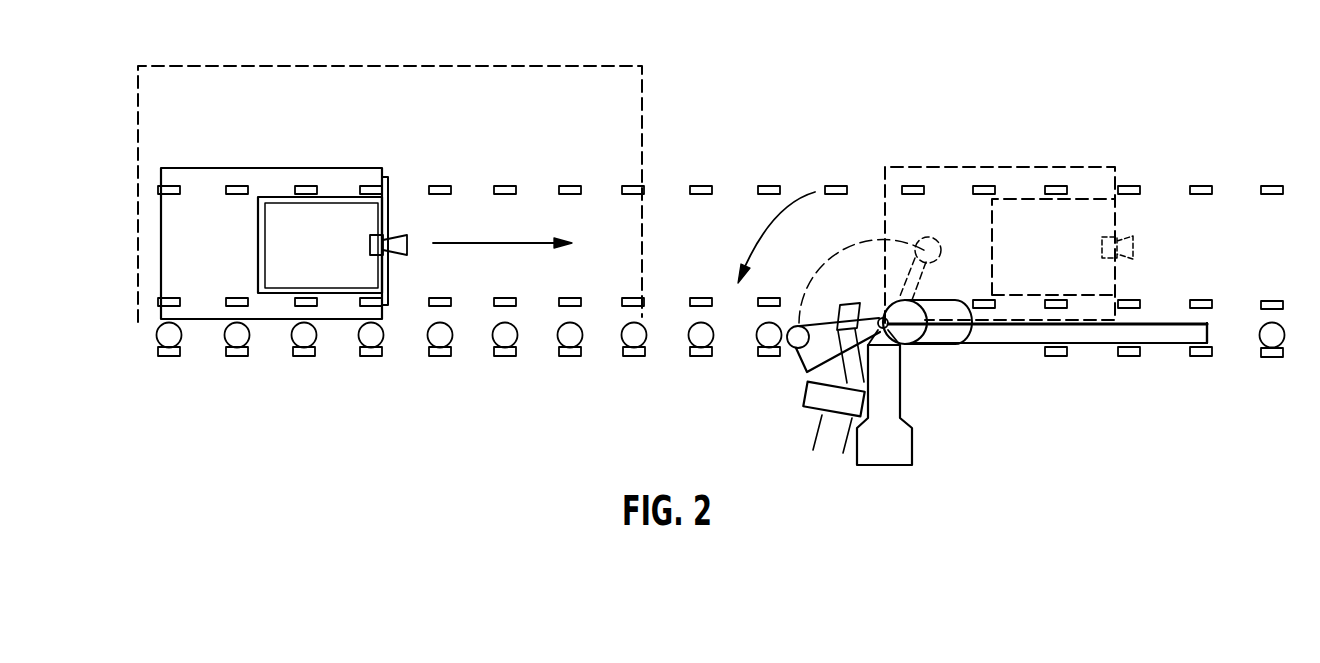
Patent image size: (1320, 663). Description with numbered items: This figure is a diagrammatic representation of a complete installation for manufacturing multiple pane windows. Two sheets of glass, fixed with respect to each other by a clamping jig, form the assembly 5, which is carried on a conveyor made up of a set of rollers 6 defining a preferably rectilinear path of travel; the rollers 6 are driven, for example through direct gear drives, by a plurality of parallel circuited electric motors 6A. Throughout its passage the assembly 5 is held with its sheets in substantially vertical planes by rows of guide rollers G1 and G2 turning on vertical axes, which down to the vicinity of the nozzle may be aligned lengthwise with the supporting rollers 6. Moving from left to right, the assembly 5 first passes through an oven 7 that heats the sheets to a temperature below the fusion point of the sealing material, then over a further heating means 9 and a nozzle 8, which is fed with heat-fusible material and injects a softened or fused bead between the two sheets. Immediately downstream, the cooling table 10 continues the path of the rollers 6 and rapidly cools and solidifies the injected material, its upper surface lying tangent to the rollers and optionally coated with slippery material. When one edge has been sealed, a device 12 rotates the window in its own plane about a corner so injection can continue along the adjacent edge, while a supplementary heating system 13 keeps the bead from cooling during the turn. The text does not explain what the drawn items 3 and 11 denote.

The inner frame of carriage 3 is at (337, 293).
The assembly 5 is at (268, 320).
The rollers 6 is at (515, 347).
The electric motors 6A is at (572, 356).
The oven 7 is at (642, 243).
The nozzle 8 is at (897, 445).
The further heating means 9 is at (842, 373).
The cooling table 10 is at (1055, 333).
The rail upper surface 11 is at (1160, 323).
The device 12 is at (875, 320).
The supplementary heating system 13 is at (950, 335).
The guide rollers G1 is at (438, 183).
The guide rollers G2 is at (450, 302).